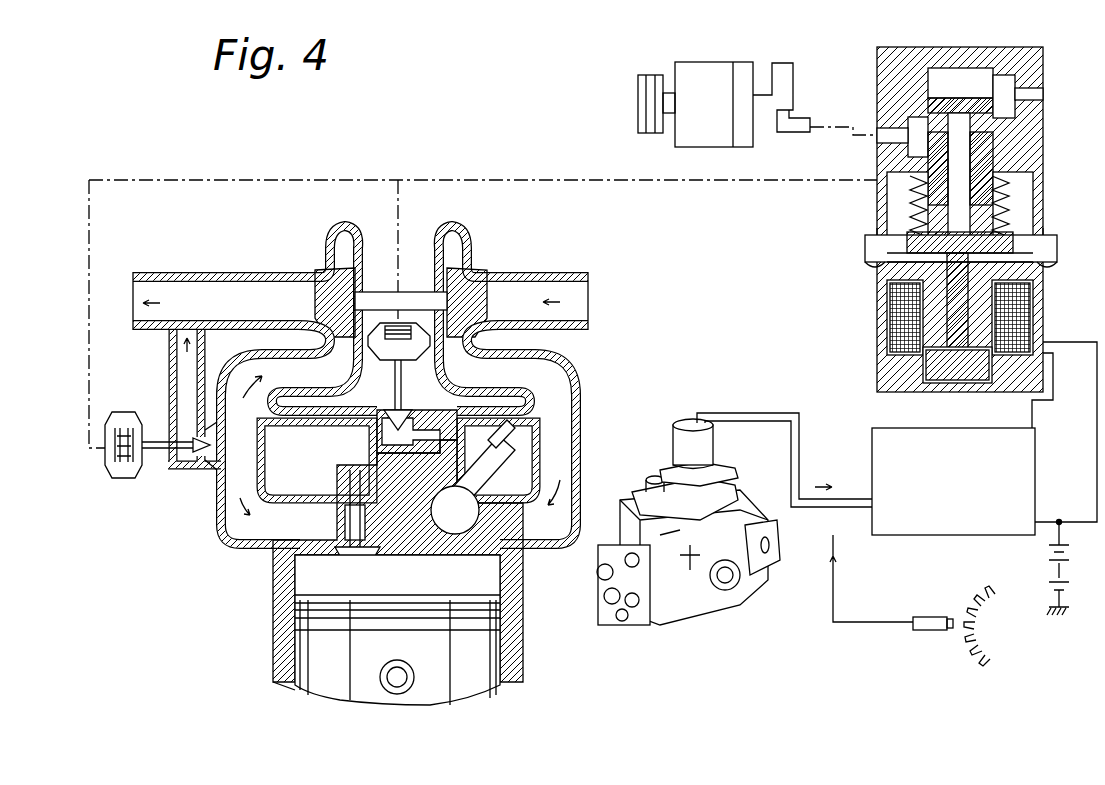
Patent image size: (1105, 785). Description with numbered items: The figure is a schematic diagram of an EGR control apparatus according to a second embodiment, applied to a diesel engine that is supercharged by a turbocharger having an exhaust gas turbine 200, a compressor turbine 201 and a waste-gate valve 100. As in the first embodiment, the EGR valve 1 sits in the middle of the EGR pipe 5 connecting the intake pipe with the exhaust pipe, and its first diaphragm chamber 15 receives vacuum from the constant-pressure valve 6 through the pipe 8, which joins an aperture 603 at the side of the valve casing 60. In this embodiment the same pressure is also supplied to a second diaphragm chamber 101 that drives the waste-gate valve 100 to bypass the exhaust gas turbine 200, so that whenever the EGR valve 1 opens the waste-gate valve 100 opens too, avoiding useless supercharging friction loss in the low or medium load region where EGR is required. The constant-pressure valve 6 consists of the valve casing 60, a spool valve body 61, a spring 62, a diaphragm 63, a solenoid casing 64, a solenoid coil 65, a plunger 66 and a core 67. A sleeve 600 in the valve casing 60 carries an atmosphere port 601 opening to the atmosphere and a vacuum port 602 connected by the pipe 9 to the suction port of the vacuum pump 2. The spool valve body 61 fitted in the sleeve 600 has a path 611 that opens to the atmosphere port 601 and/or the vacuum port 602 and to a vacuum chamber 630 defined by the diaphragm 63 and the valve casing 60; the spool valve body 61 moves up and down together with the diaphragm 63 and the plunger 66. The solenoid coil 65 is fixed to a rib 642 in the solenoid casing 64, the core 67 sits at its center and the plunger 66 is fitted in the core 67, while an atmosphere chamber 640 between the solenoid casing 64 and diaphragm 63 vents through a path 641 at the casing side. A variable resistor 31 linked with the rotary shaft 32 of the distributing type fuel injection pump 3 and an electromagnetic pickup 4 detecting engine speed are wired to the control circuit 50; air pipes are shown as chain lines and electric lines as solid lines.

The EGR valve 1 is at (410, 290).
The vacuum pump 2 is at (785, 63).
The distributing type fuel injection pump 3 is at (688, 494).
The electromagnetic pickup 4 is at (925, 632).
The EGR pipe 5 is at (1072, 565).
The constant-pressure valve 6 is at (957, 205).
The pipe 8 is at (651, 180).
The pipe 9 is at (836, 135).
The diaphragm chamber 15 is at (383, 262).
The variable resistor 31 is at (697, 422).
The rotary shaft 32 is at (667, 462).
The control circuit 50 is at (1038, 482).
The valve casing 60 is at (1043, 52).
The spool valve body 61 is at (990, 85).
The spring 62 is at (1010, 170).
The diaphragm 63 is at (1030, 235).
The solenoid casing 64 is at (1043, 292).
The solenoid coil 65 is at (1035, 325).
The plunger 66 is at (925, 368).
The core 67 is at (882, 330).
The waste-gate valve 100 is at (112, 470).
The second diaphragm chamber 101 is at (128, 480).
The exhaust gas turbine 200 is at (318, 273).
The compressor turbine 201 is at (480, 272).
The sleeve 600 is at (958, 70).
The atmosphere port 601 is at (1010, 94).
The vacuum port 602 is at (915, 128).
The aperture 603 is at (877, 182).
The path 611 is at (990, 128).
The vacuum chamber 630 is at (1027, 190).
The atmosphere chamber 640 is at (1057, 236).
The path 641 is at (1045, 258).
The rib 642 is at (877, 272).